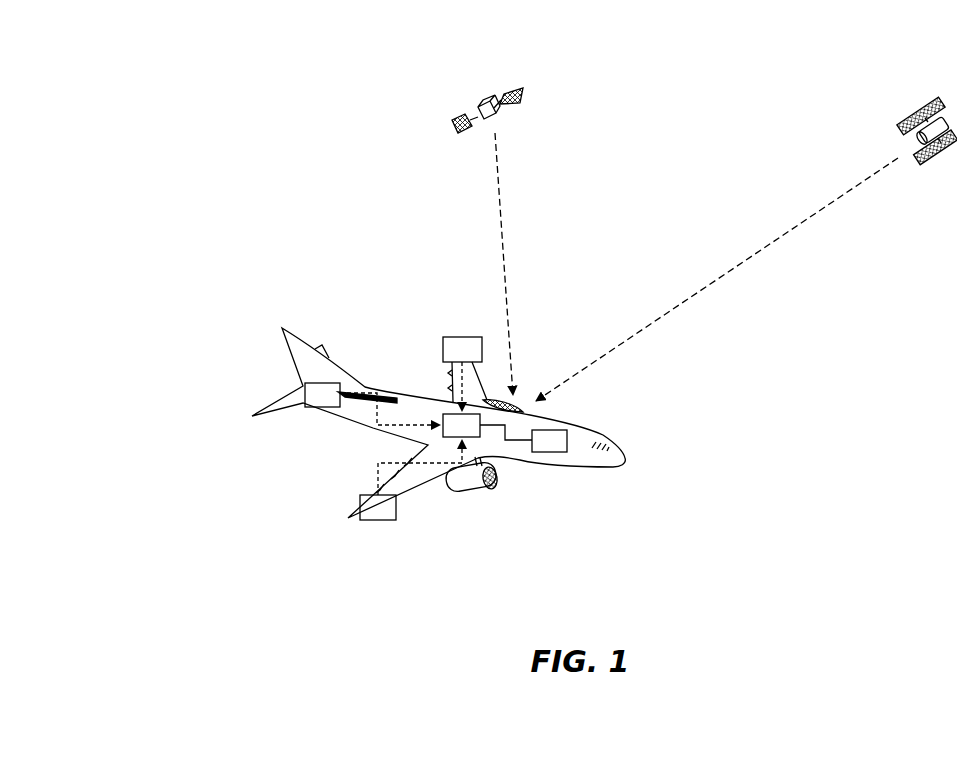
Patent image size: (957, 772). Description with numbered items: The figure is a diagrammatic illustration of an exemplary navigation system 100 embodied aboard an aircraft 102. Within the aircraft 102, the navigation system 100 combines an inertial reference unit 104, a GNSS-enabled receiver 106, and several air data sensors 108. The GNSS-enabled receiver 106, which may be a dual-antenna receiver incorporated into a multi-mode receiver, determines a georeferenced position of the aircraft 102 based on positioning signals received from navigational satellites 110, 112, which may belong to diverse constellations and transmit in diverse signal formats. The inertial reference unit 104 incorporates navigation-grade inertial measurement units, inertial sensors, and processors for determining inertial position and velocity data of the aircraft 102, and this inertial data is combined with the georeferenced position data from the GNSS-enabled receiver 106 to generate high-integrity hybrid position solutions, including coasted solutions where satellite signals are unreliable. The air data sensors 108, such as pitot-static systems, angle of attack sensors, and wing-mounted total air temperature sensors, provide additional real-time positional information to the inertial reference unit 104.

The navigation system 100 is at (178, 59).
The aircraft 102 is at (330, 413).
The inertial reference unit 104 is at (487, 427).
The GNSS-enabled receiver 106 is at (549, 441).
The air data sensor 108 is at (396, 428).
The navigational satellite 110 is at (477, 104).
The navigational satellite 112 is at (918, 114).